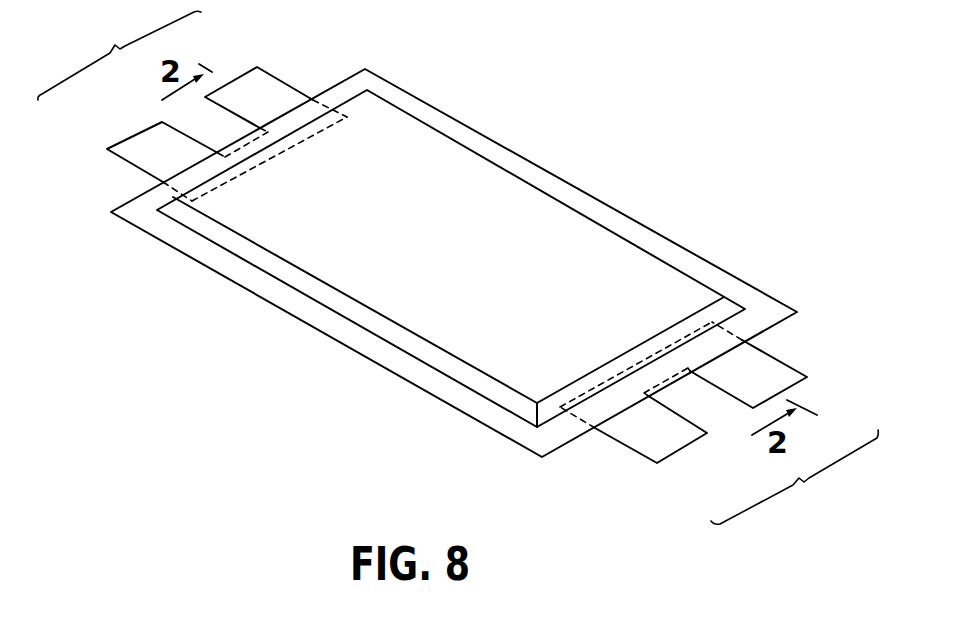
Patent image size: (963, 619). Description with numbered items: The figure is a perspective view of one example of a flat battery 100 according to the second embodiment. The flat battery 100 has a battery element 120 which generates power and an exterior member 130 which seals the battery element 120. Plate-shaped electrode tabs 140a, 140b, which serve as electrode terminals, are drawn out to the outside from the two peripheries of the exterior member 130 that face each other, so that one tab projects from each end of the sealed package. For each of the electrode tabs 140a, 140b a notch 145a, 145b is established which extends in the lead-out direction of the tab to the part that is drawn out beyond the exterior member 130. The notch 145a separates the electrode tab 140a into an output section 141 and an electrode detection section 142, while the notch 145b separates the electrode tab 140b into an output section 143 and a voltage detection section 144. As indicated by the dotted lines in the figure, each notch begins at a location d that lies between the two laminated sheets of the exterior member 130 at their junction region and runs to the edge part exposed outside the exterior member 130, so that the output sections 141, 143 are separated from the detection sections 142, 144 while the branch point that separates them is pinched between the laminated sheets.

The flat battery 100 is at (636, 92).
The battery element 120 is at (527, 213).
The exterior member 130 is at (383, 125).
The electrode tab 140a is at (119, 55).
The electrode tab 140b is at (794, 477).
The output section 141 is at (245, 83).
The electrode detection section 142 is at (137, 147).
The output section 143 is at (760, 365).
The voltage detection section 144 is at (662, 448).
The notch 145a is at (202, 118).
The notch 145b is at (713, 418).
The location d is at (310, 107).